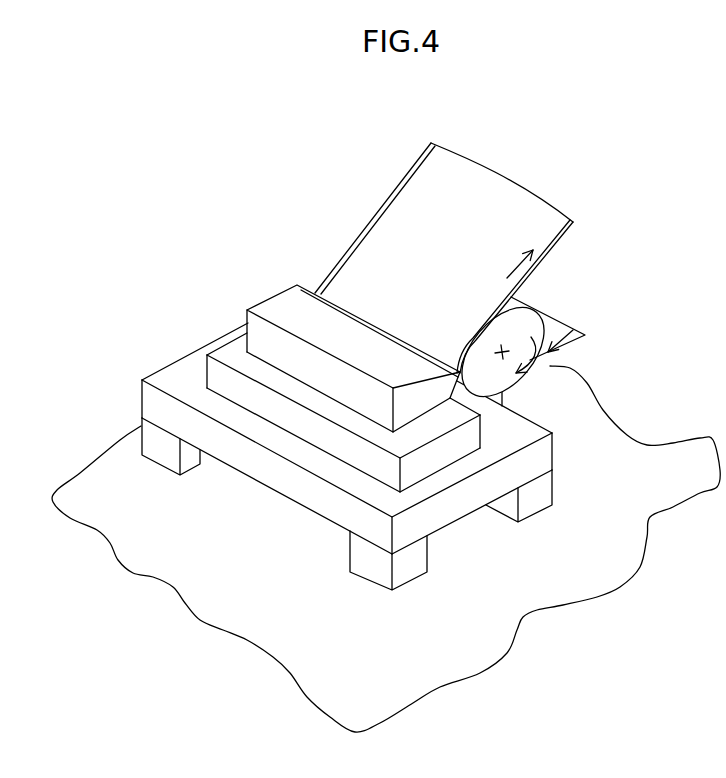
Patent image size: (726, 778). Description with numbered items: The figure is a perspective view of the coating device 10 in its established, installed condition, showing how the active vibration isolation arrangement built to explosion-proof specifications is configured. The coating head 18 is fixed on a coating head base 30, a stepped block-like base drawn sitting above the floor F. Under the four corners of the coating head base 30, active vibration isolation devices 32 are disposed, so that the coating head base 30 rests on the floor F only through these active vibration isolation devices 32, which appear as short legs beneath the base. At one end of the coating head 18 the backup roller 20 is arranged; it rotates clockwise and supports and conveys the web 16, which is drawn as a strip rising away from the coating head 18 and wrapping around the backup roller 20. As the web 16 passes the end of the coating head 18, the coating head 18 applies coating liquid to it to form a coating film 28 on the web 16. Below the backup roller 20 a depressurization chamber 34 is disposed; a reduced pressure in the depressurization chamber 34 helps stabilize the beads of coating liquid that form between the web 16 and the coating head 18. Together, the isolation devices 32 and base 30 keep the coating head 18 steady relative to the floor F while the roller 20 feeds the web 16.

The coating device 10 is at (402, 395).
The web 16 is at (500, 258).
The coating head 18 is at (283, 310).
The backup roller 20 is at (540, 312).
The coating film 28 is at (410, 225).
The coating head base 30 is at (312, 427).
The active vibration isolation devices 32 is at (198, 471).
The depressurization chamber 34 is at (502, 400).
The floor F is at (620, 587).